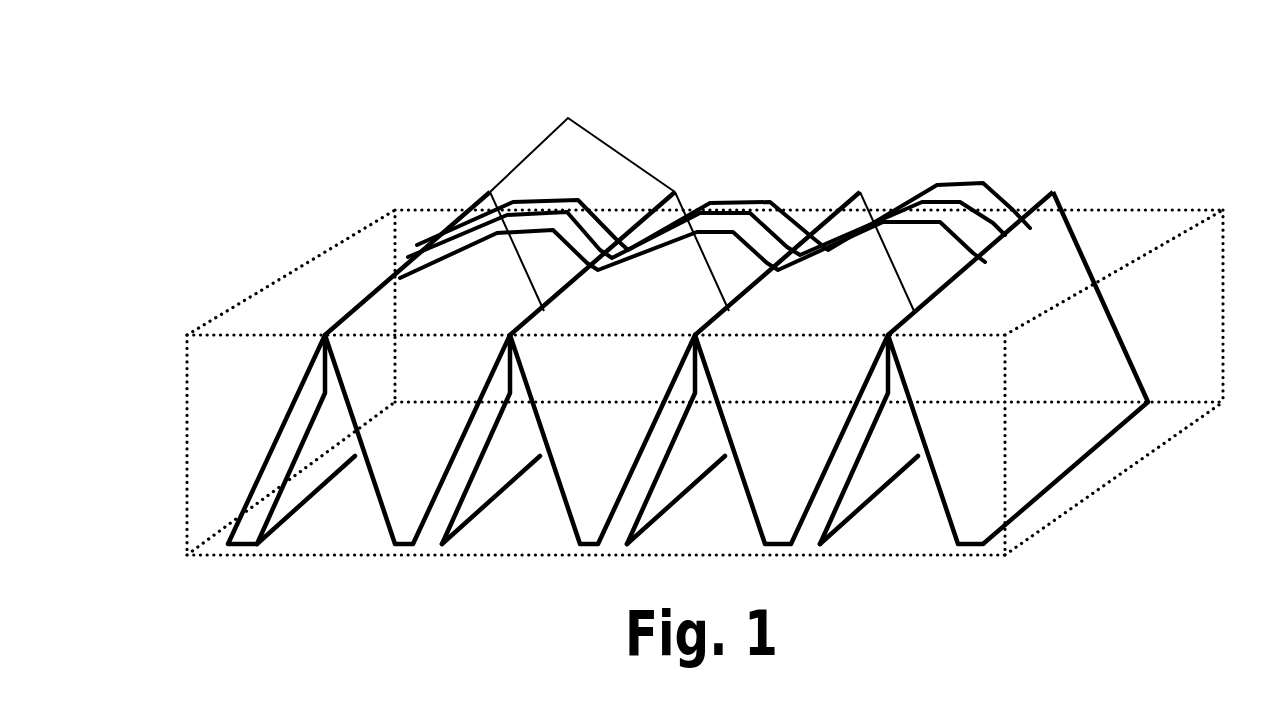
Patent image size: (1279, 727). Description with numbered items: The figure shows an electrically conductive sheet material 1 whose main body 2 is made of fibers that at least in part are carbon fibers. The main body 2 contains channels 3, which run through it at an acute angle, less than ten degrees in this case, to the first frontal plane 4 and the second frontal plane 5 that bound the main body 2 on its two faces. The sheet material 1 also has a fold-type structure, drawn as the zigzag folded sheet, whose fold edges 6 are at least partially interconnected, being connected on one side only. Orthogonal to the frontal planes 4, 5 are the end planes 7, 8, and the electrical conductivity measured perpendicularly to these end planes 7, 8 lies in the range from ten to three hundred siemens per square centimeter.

The electrically conductive sheet material 1 is at (705, 283).
The main body 2 is at (1078, 235).
The channels 3 is at (891, 537).
The first frontal plane 4 is at (1142, 242).
The second frontal plane 5 is at (520, 528).
The fold edges 6 is at (715, 165).
The end plane 7 is at (1025, 532).
The end plane 8 is at (220, 457).